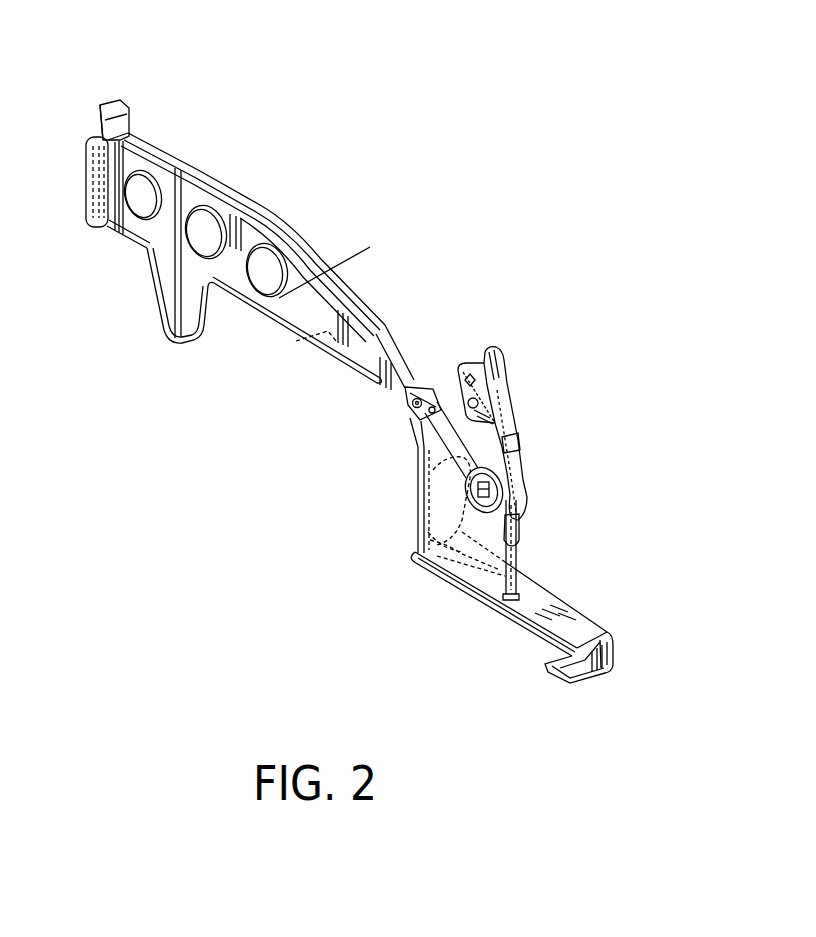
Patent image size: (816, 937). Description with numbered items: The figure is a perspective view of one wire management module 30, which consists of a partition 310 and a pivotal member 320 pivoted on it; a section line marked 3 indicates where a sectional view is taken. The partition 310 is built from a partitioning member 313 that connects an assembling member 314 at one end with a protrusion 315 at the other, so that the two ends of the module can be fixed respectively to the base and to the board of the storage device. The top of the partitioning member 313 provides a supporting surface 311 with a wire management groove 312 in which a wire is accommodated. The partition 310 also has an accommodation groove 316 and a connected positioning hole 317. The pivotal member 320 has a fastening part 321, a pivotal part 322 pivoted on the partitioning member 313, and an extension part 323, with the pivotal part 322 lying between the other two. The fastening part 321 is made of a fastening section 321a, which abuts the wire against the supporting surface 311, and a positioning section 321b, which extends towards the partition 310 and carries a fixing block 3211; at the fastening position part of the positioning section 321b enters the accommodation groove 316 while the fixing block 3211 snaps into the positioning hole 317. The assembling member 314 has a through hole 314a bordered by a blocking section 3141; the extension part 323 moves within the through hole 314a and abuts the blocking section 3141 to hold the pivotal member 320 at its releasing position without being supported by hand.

The wire management module 30 is at (43, 29).
The section indicator for FIG. 3 is at (376, 262).
The partition 310 is at (378, 645).
The supporting surface 311 is at (473, 449).
The wire management groove 312 is at (207, 168).
The partitioning member 313 is at (332, 330).
The assembling member 314 is at (495, 606).
The blocking section 3141 is at (428, 530).
The through hole 314a is at (512, 565).
The protrusion 315 is at (88, 176).
The accommodation groove 316 is at (418, 408).
The positioning hole 317 is at (432, 395).
The pivotal member 320 is at (643, 345).
The fastening part 321 is at (586, 325).
The fastening section 321a is at (500, 371).
The positioning section 321b is at (502, 392).
The fixing block 3211 is at (474, 372).
The pivotal part 322 is at (526, 487).
The extension part 323 is at (512, 552).